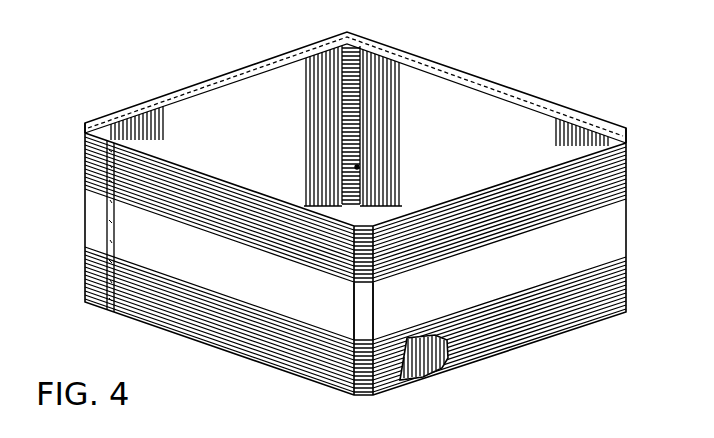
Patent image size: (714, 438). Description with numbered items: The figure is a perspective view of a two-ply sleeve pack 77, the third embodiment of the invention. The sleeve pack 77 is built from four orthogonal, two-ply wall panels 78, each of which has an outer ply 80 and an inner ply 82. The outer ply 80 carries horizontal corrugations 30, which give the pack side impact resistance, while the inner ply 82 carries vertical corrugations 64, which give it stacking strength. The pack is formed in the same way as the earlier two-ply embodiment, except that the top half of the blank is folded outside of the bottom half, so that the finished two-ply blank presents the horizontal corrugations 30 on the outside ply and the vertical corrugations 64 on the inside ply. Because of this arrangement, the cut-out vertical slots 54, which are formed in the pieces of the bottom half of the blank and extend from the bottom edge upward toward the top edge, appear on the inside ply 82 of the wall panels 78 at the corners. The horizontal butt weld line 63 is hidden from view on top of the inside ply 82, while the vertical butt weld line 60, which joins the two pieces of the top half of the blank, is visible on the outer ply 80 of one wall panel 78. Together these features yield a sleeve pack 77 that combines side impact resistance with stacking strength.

The horizontal corrugations 30 is at (368, 38).
The cut-out vertical slots 54 is at (359, 167).
The vertical butt weld line 60 is at (103, 222).
The horizontal butt weld line 63 is at (268, 62).
The vertical corrugations 64 is at (165, 133).
The two-ply sleeve pack 77 is at (82, 322).
The wall panels 78 is at (172, 92).
The outer ply 80 is at (368, 299).
The inner ply 82 is at (440, 393).